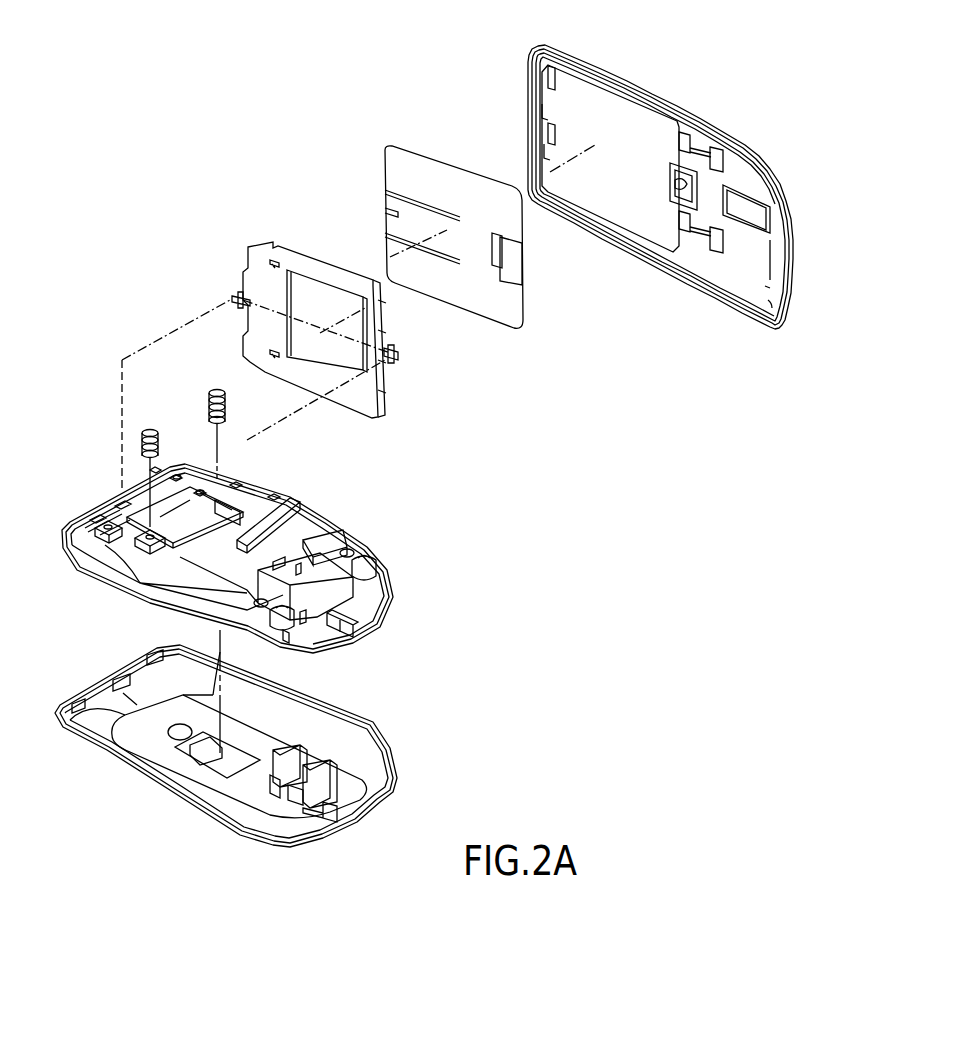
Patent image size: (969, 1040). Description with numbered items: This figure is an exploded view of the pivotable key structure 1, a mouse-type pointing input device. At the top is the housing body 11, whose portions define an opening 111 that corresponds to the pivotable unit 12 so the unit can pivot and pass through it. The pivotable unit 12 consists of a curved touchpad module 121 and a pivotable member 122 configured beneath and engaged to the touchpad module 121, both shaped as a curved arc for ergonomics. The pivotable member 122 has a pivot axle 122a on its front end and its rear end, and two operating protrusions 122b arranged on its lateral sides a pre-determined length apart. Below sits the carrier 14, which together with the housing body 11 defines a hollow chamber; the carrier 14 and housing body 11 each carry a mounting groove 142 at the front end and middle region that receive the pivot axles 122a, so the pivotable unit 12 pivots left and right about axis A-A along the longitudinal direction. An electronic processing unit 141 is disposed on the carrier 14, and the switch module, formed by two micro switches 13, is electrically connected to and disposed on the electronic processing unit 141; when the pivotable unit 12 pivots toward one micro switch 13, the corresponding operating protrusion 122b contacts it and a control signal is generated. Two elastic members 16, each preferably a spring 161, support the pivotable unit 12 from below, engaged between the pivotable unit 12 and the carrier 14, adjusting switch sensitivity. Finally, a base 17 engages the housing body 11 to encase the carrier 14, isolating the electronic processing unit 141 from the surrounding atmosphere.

The pivotable key structure 1 is at (152, 68).
The housing body 11 is at (660, 177).
The opening 111 is at (609, 110).
The pivotable unit 12 is at (382, 293).
The touchpad module 121 is at (523, 320).
The pivotable member 122 is at (362, 322).
The pivot axle 122a is at (240, 298).
The operating protrusion 122b is at (280, 262).
The micro switch 13 is at (98, 506).
The carrier 14 is at (279, 543).
The electronic processing unit 141 is at (203, 510).
The mounting groove 142 is at (120, 503).
The elastic member 16 is at (183, 440).
The spring 161 is at (212, 416).
The base 17 is at (392, 753).